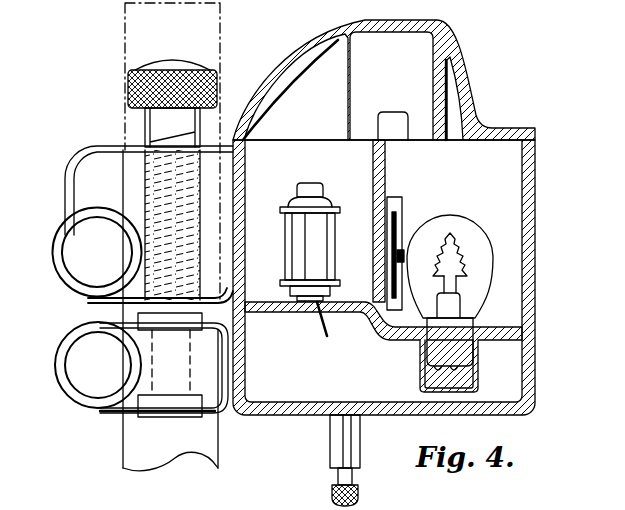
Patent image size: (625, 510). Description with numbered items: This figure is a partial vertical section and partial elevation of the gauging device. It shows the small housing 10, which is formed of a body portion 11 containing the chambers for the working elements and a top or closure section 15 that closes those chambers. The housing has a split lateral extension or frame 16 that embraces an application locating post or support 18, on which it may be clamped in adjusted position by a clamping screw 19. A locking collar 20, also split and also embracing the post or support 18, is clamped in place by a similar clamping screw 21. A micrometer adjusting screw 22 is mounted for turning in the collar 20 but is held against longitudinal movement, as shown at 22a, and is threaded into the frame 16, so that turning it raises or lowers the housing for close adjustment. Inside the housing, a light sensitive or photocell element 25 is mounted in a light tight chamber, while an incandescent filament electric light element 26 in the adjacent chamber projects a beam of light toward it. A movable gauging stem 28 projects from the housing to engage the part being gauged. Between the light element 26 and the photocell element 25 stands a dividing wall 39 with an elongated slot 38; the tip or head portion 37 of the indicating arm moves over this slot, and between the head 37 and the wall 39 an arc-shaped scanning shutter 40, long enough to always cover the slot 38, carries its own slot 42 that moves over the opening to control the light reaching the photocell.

The housing 10 is at (417, 217).
The body portion 11 is at (536, 336).
The top or closure section 15 is at (478, 101).
The split lateral extension or frame 16 is at (78, 155).
The application locating post or support 18 is at (124, 50).
The clamping screw 19 is at (62, 277).
The locking collar 20 is at (124, 414).
The clamping screw 21 is at (60, 384).
The micrometer adjusting screw 22 is at (128, 97).
The retaining means holding screw against longitudinal movement 22a is at (216, 414).
The light sensitive or photocell element 25 is at (332, 226).
The incandescent filament electric light element 26 is at (466, 237).
The movable gauging stem 28 is at (358, 478).
The tip or head portion 37 is at (402, 256).
The elongated slot 38 is at (378, 285).
The dividing wall 39 is at (374, 184).
The scanning shutter 40 is at (394, 232).
The slot 42 is at (392, 257).